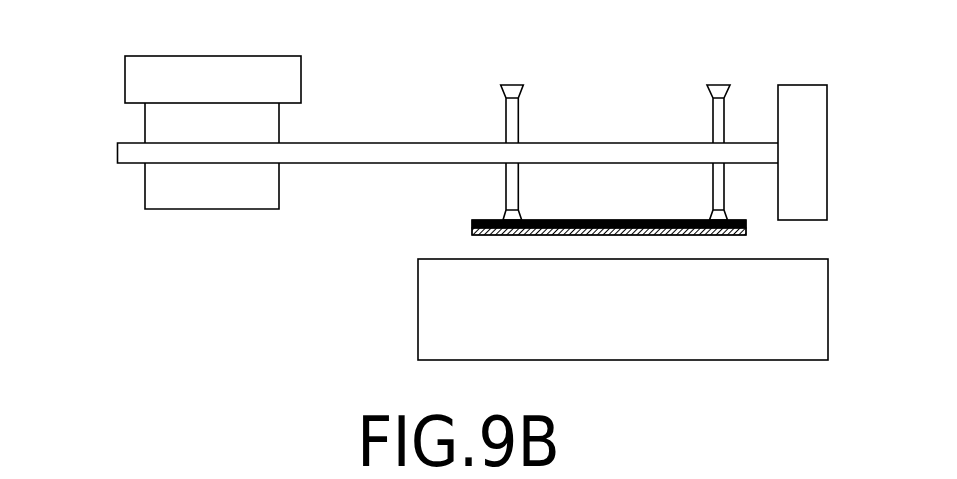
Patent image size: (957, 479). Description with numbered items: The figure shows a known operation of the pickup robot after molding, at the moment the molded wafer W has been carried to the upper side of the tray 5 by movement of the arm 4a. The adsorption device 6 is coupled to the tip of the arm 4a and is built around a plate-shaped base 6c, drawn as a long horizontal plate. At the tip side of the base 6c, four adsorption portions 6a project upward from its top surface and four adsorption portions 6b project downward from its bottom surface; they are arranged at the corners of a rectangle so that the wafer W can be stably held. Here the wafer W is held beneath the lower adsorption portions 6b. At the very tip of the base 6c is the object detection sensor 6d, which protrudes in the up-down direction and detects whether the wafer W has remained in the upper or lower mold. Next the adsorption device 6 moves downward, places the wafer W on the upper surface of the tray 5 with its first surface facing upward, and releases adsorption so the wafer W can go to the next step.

The arm 4a is at (124, 82).
The tray 5 is at (418, 328).
The adsorption device 6 is at (351, 108).
The adsorption portions 6a is at (505, 111).
The adsorption portions 6b is at (505, 186).
The base 6c is at (320, 164).
The object detection sensor 6d is at (827, 114).
The wafer W is at (471, 229).